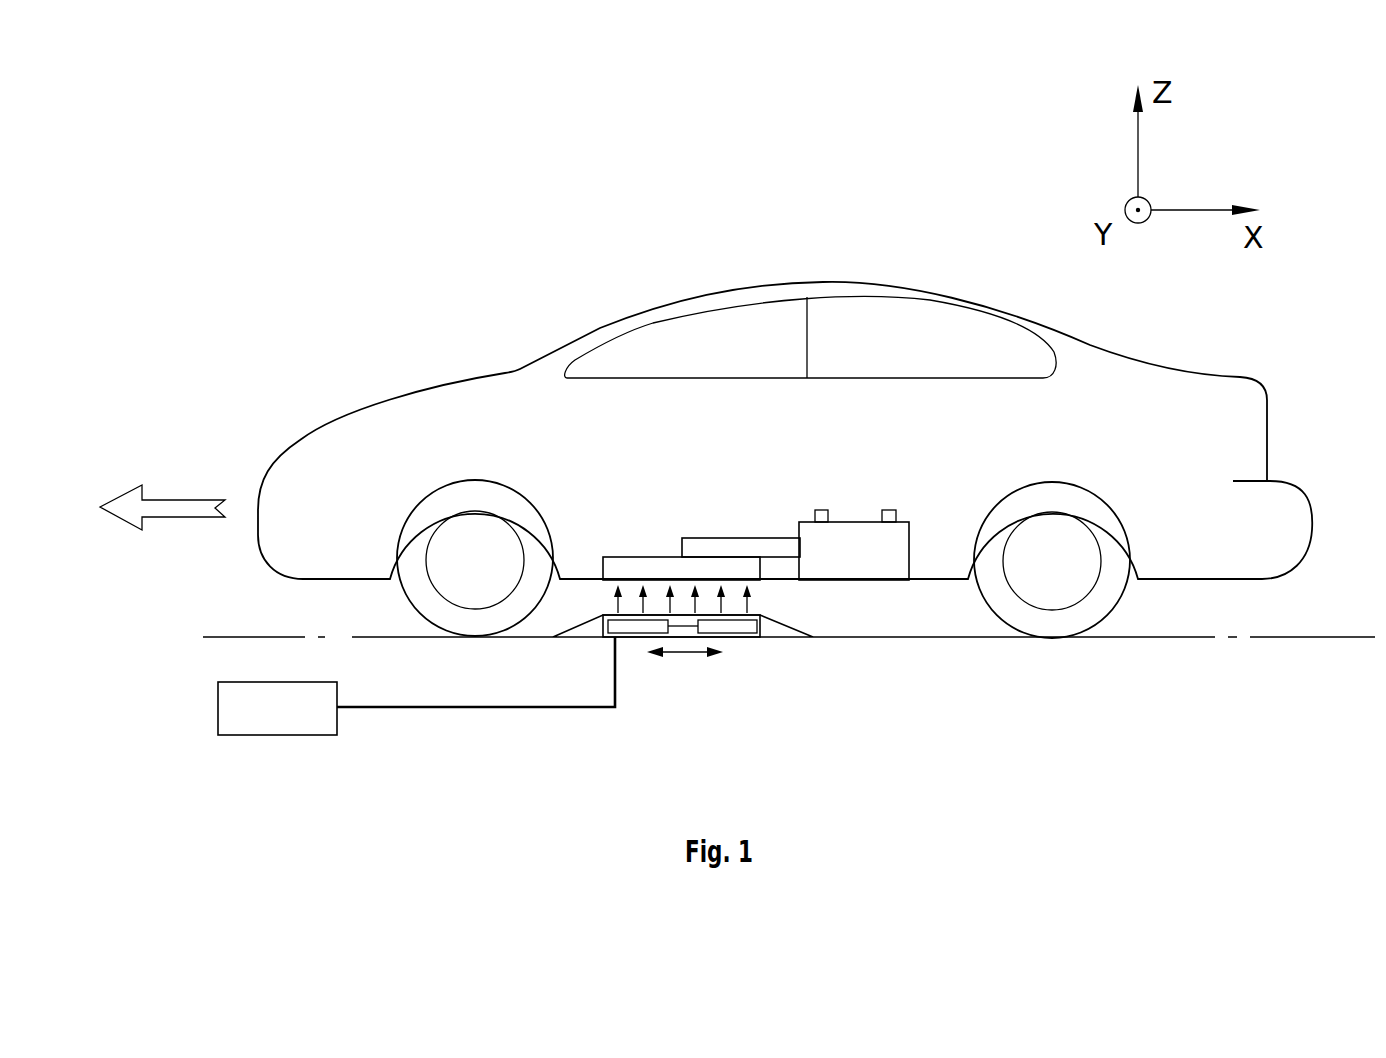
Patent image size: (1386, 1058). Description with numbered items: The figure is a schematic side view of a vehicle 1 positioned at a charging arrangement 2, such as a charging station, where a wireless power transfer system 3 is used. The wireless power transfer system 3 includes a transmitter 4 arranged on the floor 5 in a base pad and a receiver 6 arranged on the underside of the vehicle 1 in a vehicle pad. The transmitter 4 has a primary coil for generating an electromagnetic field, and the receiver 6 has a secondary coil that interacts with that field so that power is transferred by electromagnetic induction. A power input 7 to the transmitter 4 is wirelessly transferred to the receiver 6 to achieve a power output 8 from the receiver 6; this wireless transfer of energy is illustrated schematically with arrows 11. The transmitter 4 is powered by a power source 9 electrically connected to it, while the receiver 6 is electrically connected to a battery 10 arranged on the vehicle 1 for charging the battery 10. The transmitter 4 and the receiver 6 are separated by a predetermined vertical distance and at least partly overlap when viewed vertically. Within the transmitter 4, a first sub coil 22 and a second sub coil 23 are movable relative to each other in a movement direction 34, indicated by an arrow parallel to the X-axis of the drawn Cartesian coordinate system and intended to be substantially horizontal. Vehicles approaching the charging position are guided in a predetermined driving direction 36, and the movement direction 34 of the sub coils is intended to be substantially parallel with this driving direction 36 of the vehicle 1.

The vehicle 1 is at (834, 282).
The charging arrangement 2 is at (370, 316).
The wireless power transfer system 3 is at (775, 665).
The transmitter 4 is at (740, 637).
The floor 5 is at (965, 637).
The receiver 6 is at (628, 557).
The power input 7 is at (513, 707).
The power output 8 is at (732, 538).
The power source 9 is at (280, 735).
The battery 10 is at (858, 548).
The arrows 11 is at (748, 603).
The first sub coil 22 is at (722, 627).
The second sub coil 23 is at (632, 627).
The movement direction 34 is at (687, 657).
The driving direction 36 is at (178, 500).